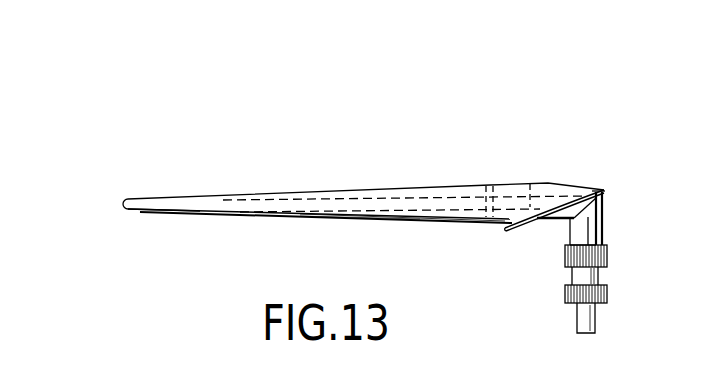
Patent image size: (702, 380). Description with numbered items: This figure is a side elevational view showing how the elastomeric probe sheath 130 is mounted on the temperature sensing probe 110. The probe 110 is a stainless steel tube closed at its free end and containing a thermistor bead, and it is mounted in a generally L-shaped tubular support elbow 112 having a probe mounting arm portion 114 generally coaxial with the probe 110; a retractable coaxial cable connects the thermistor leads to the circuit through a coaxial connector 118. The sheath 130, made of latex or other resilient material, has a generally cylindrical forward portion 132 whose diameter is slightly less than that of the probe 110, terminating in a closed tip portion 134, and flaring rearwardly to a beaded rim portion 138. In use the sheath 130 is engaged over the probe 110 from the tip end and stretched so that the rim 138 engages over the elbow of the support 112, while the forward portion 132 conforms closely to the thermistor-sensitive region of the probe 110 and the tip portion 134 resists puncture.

The temperature sensing probe 110 is at (398, 202).
The L-shaped tubular support elbow 112 is at (603, 223).
The probe mounting arm portion 114 is at (552, 219).
The coaxial connector 118 is at (570, 276).
The elastomeric probe sheath 130 is at (326, 224).
The forward portion 132 is at (148, 212).
The closed tip portion 134 is at (122, 203).
The beaded rim portion 138 is at (549, 203).